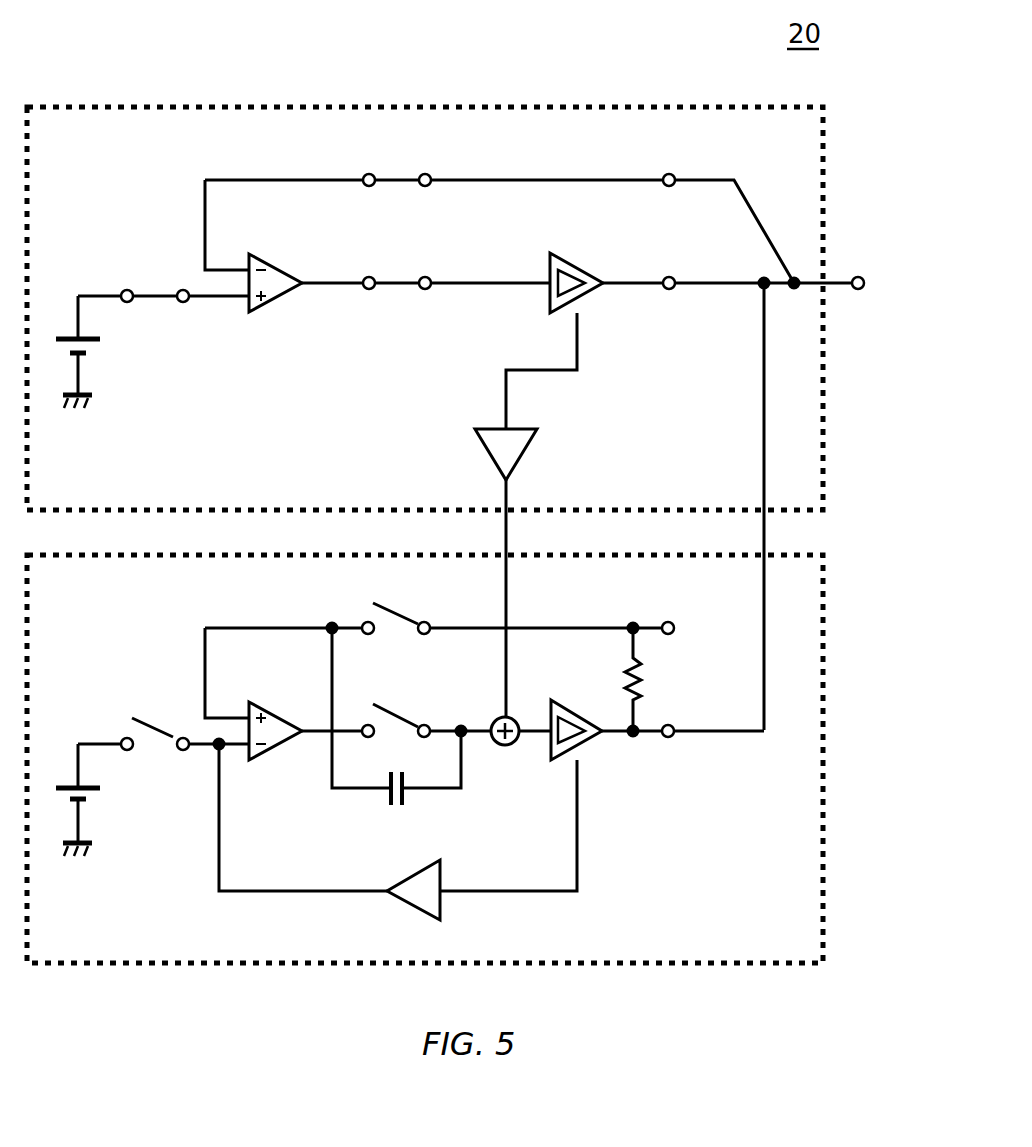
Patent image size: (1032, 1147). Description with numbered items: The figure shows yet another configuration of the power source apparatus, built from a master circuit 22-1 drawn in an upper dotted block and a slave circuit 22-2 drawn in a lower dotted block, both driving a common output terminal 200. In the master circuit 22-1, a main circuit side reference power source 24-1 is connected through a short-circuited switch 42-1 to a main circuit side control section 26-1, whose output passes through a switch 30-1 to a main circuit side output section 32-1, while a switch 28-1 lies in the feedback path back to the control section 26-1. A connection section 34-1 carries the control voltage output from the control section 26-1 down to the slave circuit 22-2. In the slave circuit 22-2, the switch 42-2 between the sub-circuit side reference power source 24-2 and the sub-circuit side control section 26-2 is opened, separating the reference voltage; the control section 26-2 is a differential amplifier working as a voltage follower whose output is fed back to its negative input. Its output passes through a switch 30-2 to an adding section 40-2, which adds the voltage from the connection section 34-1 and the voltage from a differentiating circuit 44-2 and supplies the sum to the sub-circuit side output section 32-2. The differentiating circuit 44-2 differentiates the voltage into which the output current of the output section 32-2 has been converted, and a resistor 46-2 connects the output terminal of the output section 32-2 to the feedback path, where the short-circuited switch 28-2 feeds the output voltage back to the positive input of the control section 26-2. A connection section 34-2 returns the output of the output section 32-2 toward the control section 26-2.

The master circuit 22-1 is at (823, 450).
The slave circuit 22-2 is at (823, 900).
The main circuit side reference power source 24-1 is at (98, 336).
The sub-circuit side reference power source 24-2 is at (98, 785).
The main circuit side control section 26-1 is at (272, 263).
The sub-circuit side control section 26-2 is at (265, 710).
The switch 28-1 is at (427, 173).
The switch 28-2 is at (363, 620).
The switch 30-1 is at (427, 276).
The switch 30-2 is at (428, 724).
The main circuit side output section 32-1 is at (578, 262).
The sub-circuit side output section 32-2 is at (553, 750).
The connection section 34-1 is at (522, 455).
The connection section 34-2 is at (412, 905).
The adding section 40-2 is at (516, 720).
The switch 42-1 is at (126, 288).
The switch 42-2 is at (126, 736).
The differentiating circuit 44-2 is at (392, 806).
The resistor 46-2 is at (646, 682).
The output terminal 200 is at (839, 499).